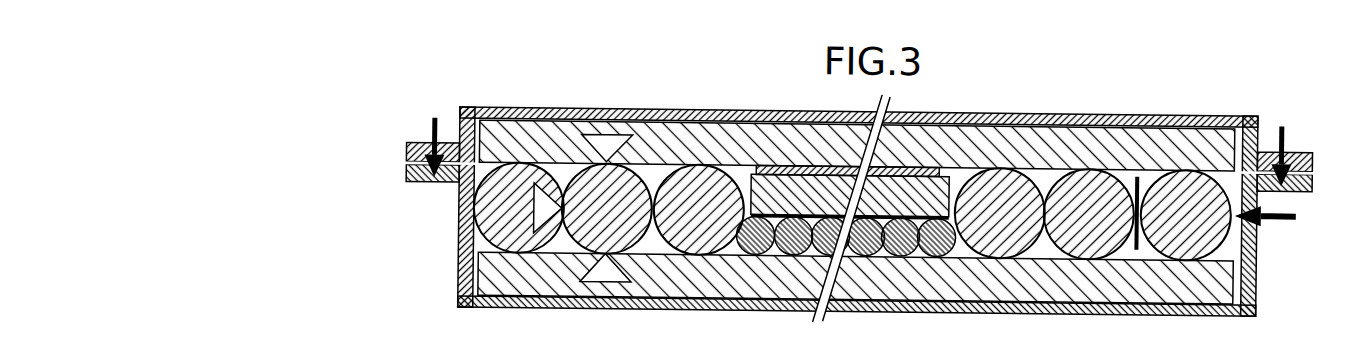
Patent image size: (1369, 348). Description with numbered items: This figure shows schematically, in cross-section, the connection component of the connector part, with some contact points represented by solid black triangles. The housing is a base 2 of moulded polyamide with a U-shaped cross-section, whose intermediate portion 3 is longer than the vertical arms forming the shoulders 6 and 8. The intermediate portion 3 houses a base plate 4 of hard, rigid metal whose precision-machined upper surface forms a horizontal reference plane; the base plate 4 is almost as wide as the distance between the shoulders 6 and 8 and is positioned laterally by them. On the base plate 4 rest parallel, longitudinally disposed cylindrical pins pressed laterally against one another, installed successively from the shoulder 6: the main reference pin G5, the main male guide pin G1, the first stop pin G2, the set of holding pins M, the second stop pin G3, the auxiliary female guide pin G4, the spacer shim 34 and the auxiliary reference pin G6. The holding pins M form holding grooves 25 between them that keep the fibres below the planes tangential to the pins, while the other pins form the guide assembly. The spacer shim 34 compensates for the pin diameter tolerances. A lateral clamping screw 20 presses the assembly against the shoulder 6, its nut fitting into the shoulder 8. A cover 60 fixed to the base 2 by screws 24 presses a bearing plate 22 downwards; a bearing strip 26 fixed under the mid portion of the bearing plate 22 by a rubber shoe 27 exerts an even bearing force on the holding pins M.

The base 2 is at (500, 309).
The intermediate portion 3 is at (1005, 281).
The base plate 4 is at (570, 264).
The shoulder 6 is at (460, 227).
The shoulder 8 is at (1258, 232).
The lateral clamping screw 20 is at (1272, 205).
The bearing plate 22 is at (560, 160).
The screws 24 is at (428, 131).
The holding groove 25 is at (910, 321).
The bearing strip 26 is at (815, 189).
The rubber shoe 27 is at (783, 162).
The spacer shim 34 is at (1130, 242).
The cover 60 is at (483, 103).
The holding pins M is at (905, 235).
The main male guide pin G1 is at (630, 185).
The first stop pin G2 is at (698, 178).
The second stop pin G3 is at (1012, 168).
The auxiliary female guide pin G4 is at (1082, 170).
The main reference pin G5 is at (515, 183).
The auxiliary reference pin G6 is at (1180, 168).